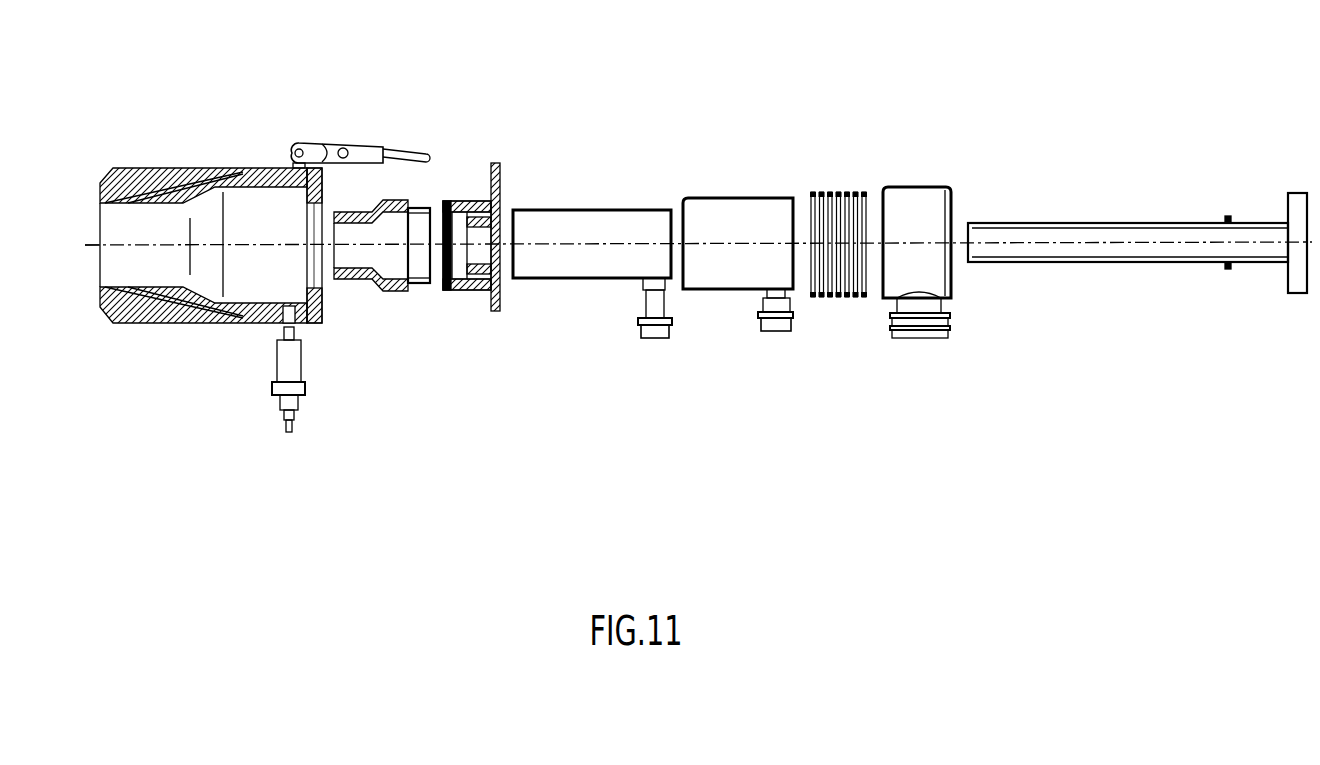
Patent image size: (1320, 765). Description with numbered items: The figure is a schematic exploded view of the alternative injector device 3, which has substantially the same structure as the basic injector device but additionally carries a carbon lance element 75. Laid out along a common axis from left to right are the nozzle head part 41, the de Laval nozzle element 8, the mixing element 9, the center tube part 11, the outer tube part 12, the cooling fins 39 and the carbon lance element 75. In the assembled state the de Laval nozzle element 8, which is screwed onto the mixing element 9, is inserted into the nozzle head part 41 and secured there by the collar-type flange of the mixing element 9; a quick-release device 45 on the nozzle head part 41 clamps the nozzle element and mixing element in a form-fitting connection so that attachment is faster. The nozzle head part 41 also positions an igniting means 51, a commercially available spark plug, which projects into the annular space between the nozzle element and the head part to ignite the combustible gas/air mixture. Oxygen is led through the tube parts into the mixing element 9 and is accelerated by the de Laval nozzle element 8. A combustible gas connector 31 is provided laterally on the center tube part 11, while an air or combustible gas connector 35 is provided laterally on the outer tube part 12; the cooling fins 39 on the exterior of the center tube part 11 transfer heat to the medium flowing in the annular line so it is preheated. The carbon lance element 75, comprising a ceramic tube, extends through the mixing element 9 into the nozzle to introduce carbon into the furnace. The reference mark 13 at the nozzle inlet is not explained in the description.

The alternative injector device 3 is at (815, 73).
The de Laval nozzle element 8 is at (434, 188).
The mixing element 9 is at (466, 177).
The center tube part 11 is at (586, 177).
The outer tube part 12 is at (915, 170).
The inlet opening 13 is at (93, 245).
The combustible gas connector 31 is at (653, 350).
The air or combustible gas connector 35 is at (774, 333).
The cooling fins 39 is at (842, 328).
The nozzle head part 41 is at (165, 145).
The quick-release device 45 is at (343, 149).
The igniting means 51 is at (289, 438).
The carbon lance element 75 is at (1060, 232).